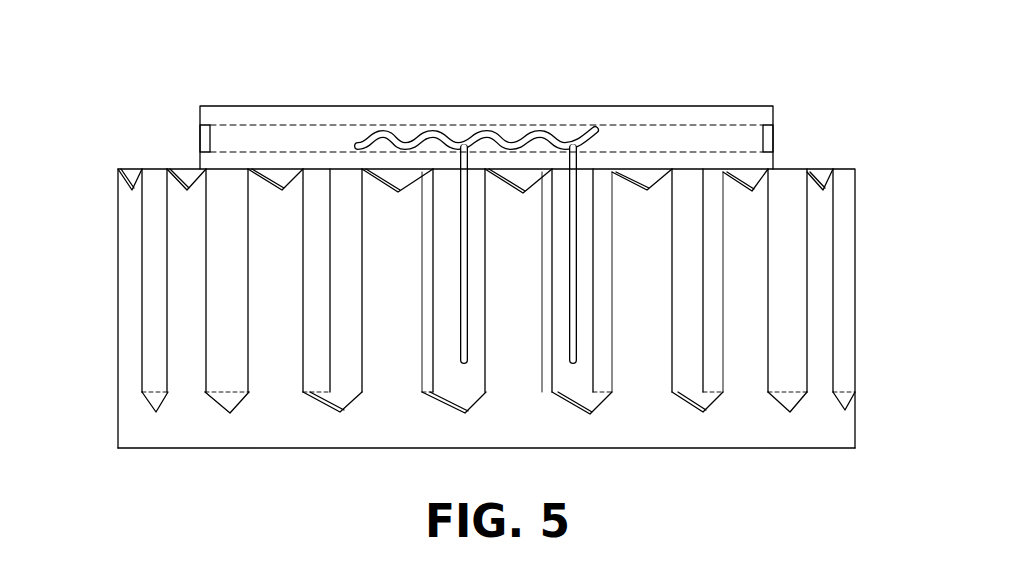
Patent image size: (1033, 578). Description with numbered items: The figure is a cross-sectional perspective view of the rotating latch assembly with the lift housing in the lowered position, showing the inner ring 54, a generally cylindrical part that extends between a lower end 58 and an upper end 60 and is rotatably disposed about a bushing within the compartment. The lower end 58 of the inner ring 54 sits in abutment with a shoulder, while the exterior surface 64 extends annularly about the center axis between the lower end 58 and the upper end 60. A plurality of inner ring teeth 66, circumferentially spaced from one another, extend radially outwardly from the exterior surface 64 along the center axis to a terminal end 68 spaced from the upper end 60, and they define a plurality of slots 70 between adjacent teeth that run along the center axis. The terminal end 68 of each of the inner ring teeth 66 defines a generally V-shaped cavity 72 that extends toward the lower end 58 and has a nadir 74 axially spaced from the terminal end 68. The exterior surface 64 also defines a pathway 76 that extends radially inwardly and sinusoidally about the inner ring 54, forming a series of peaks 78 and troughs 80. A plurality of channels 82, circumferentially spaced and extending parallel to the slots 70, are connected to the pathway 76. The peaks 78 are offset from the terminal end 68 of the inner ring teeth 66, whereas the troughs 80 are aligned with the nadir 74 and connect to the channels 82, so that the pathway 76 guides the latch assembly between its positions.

The inner ring 54 is at (856, 313).
The lower end 58 is at (278, 449).
The upper end 60 is at (368, 106).
The exterior surface 64 is at (707, 140).
The inner ring teeth 66 is at (128, 265).
The terminal end 68 is at (187, 170).
The slots 70 is at (716, 276).
The cavity 72 is at (272, 172).
The nadir 74 is at (193, 181).
The pathway 76 is at (563, 138).
The peaks 78 is at (433, 127).
The troughs 80 is at (510, 146).
The channels 82 is at (466, 359).